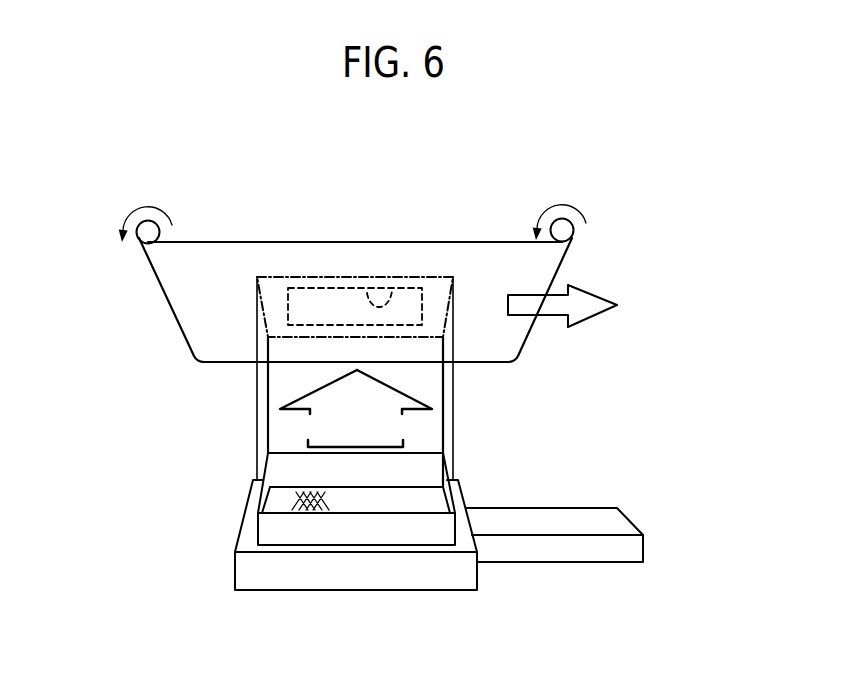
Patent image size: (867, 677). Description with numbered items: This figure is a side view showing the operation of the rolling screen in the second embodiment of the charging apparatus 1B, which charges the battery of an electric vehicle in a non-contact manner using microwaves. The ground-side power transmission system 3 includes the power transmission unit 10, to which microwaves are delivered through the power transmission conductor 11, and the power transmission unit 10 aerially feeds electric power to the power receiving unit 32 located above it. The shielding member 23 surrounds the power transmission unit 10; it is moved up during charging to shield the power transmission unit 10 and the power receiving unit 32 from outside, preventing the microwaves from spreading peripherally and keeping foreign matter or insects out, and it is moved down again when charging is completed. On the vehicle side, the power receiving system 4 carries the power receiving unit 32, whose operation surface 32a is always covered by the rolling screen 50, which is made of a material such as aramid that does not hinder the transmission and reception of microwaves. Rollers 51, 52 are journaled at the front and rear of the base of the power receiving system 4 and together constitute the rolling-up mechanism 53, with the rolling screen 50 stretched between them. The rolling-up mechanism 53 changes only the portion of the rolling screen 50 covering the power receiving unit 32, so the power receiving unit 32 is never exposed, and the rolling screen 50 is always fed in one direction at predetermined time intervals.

The rolling screen 50 is at (227, 258).
The roller 51 is at (148, 232).
The roller 52 is at (563, 230).
The rolling-up mechanism 53 is at (592, 206).
The power receiving unit 32 is at (316, 272).
The operation surface 32a is at (393, 290).
The power receiving system 4 is at (660, 290).
The charging apparatus 1B is at (165, 472).
The power transmission system 3 is at (547, 479).
The power transmission conductor 11 is at (612, 523).
The shielding member 23 is at (367, 530).
The power transmission unit 10 is at (303, 505).